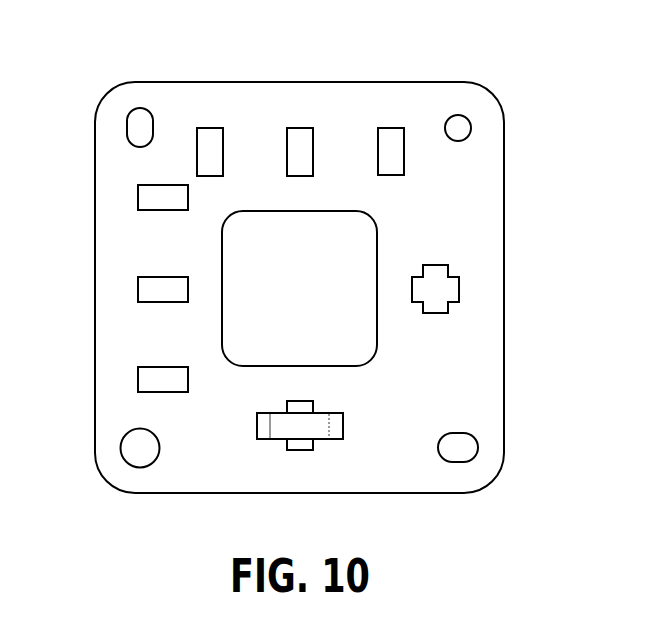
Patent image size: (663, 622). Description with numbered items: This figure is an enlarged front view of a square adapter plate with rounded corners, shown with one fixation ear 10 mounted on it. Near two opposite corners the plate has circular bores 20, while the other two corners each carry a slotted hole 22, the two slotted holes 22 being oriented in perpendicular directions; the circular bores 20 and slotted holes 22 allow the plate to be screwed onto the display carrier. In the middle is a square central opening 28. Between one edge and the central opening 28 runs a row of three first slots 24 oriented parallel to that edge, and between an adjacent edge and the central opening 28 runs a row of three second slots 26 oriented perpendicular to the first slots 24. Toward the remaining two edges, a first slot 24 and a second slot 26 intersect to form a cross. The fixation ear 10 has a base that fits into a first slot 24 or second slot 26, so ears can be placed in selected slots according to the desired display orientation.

The fixation ear 10 is at (322, 425).
The circular bore 20 is at (459, 128).
The slotted hole 22 is at (140, 130).
The first slot 24 is at (152, 288).
The second slot 26 is at (390, 152).
The central opening 28 is at (357, 250).